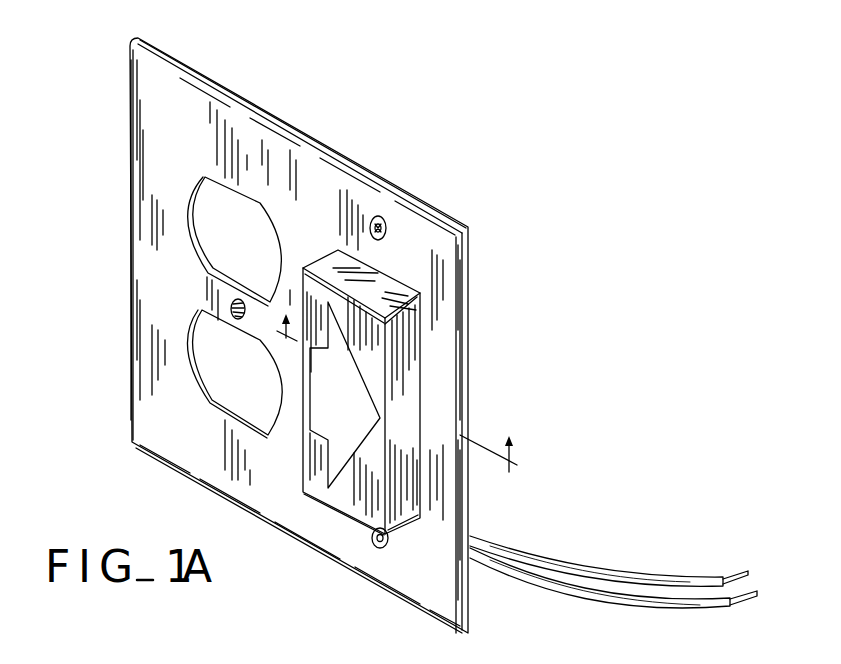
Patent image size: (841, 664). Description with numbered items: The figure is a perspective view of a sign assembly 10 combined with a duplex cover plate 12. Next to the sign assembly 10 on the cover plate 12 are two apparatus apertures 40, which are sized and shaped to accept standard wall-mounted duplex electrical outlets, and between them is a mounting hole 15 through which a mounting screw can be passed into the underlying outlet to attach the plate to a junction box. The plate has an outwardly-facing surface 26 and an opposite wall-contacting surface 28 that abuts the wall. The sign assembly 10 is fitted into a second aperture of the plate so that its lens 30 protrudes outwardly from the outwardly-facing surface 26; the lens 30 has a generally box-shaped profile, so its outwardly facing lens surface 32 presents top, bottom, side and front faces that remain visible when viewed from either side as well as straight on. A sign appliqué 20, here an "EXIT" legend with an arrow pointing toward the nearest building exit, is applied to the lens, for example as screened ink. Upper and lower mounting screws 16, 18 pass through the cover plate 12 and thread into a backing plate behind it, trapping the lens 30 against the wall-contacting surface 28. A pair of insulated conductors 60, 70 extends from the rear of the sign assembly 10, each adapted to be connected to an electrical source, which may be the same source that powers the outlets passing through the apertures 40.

The sign assembly 10 is at (472, 100).
The duplex cover plate 12 is at (202, 72).
The outwardly-facing surface 26 is at (150, 115).
The wall-contacting surface 28 is at (254, 104).
The apparatus apertures 40 is at (216, 220).
The mounting hole 15 is at (236, 315).
The mounting screw 16 is at (384, 223).
The mounting screw 18 is at (380, 548).
The lens 30 is at (416, 360).
The sign appliqué 20 is at (305, 487).
The outwardly facing lens surface 32 is at (362, 490).
The insulated conductor 70 is at (670, 578).
The insulated conductor 60 is at (690, 608).